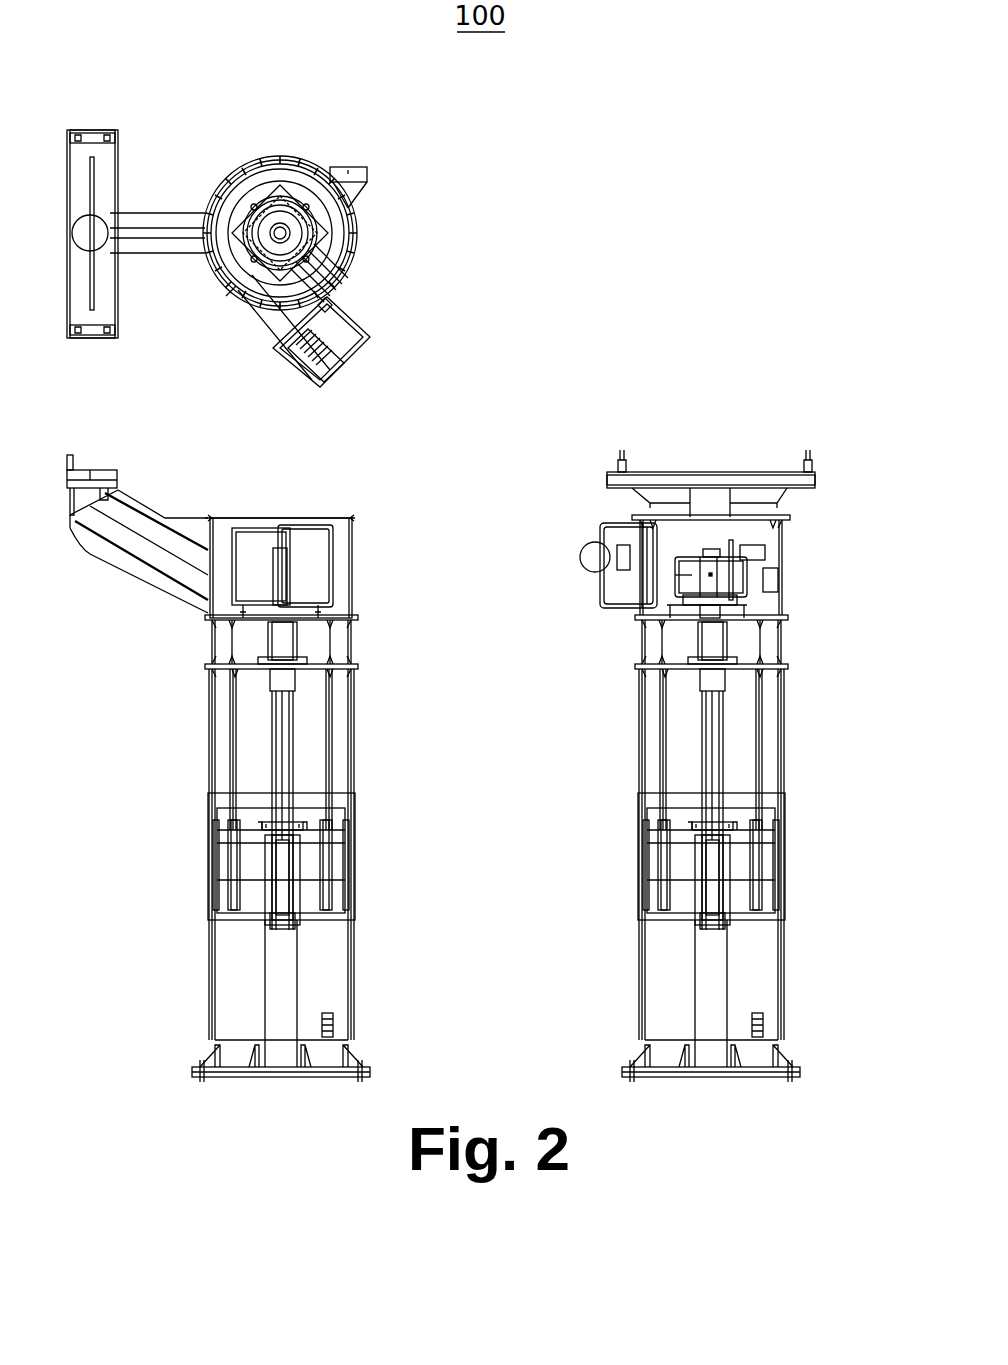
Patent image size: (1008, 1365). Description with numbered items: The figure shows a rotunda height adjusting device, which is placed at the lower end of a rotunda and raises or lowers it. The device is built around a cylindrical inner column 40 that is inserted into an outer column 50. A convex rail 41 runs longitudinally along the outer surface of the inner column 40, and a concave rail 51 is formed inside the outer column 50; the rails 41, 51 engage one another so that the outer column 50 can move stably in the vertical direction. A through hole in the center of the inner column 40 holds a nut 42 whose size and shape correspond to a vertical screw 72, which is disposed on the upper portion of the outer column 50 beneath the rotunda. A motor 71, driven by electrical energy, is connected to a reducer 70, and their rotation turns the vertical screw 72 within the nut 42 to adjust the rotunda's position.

The inner column 40 is at (780, 970).
The convex rail 41 is at (660, 868).
The nut 42 is at (730, 818).
The outer column 50 is at (783, 755).
The concave rail 51 is at (661, 738).
The reducer 70 is at (740, 571).
The motor 71 is at (345, 360).
The vertical screw 72 is at (720, 717).